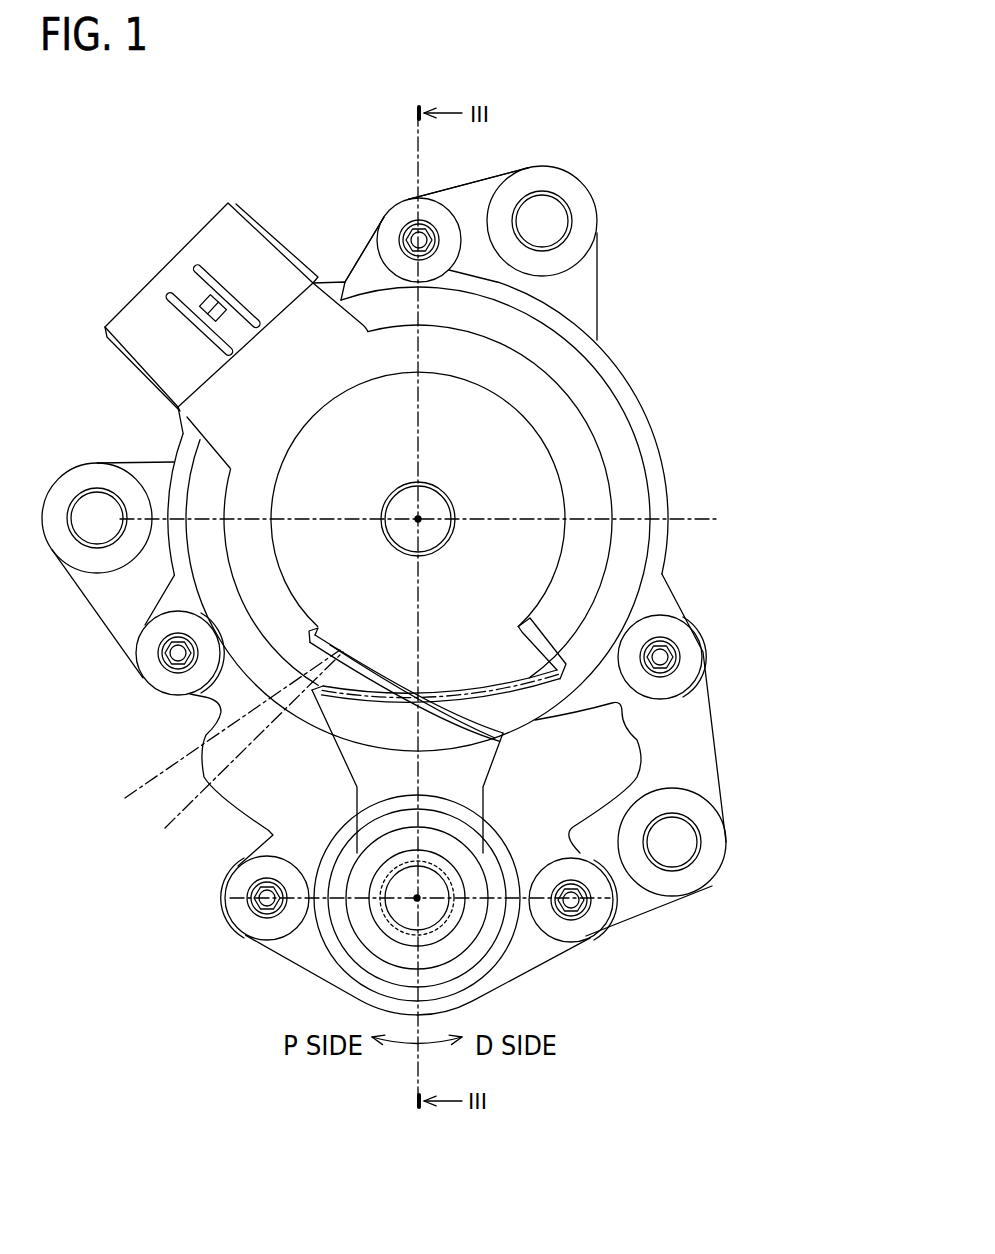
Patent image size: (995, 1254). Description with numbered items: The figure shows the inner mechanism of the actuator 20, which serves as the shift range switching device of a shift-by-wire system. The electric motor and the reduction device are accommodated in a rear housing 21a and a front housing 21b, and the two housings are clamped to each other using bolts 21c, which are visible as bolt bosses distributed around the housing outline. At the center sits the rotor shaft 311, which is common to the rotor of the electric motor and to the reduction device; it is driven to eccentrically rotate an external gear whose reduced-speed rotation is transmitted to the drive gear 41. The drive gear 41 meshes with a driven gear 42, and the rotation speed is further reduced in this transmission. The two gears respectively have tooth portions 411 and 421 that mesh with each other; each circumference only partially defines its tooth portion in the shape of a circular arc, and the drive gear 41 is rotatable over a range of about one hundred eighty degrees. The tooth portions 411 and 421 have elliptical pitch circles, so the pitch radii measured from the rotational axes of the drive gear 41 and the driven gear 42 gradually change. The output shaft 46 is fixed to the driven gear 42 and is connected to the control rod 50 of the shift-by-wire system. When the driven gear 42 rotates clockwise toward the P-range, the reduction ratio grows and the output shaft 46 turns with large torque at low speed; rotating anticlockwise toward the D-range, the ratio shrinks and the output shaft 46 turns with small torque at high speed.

The actuator 20 is at (620, 185).
The rear housing 21a is at (367, 265).
The front housing 21b is at (477, 200).
The bolts 21c is at (400, 216).
The rotor shaft 311 is at (437, 530).
The drive gear 41 is at (330, 590).
The tooth portion 411 is at (418, 519).
The driven gear 42 is at (363, 763).
The tooth portion 421 is at (417, 898).
The output shaft 46 is at (373, 927).
The control rod 50 is at (430, 913).